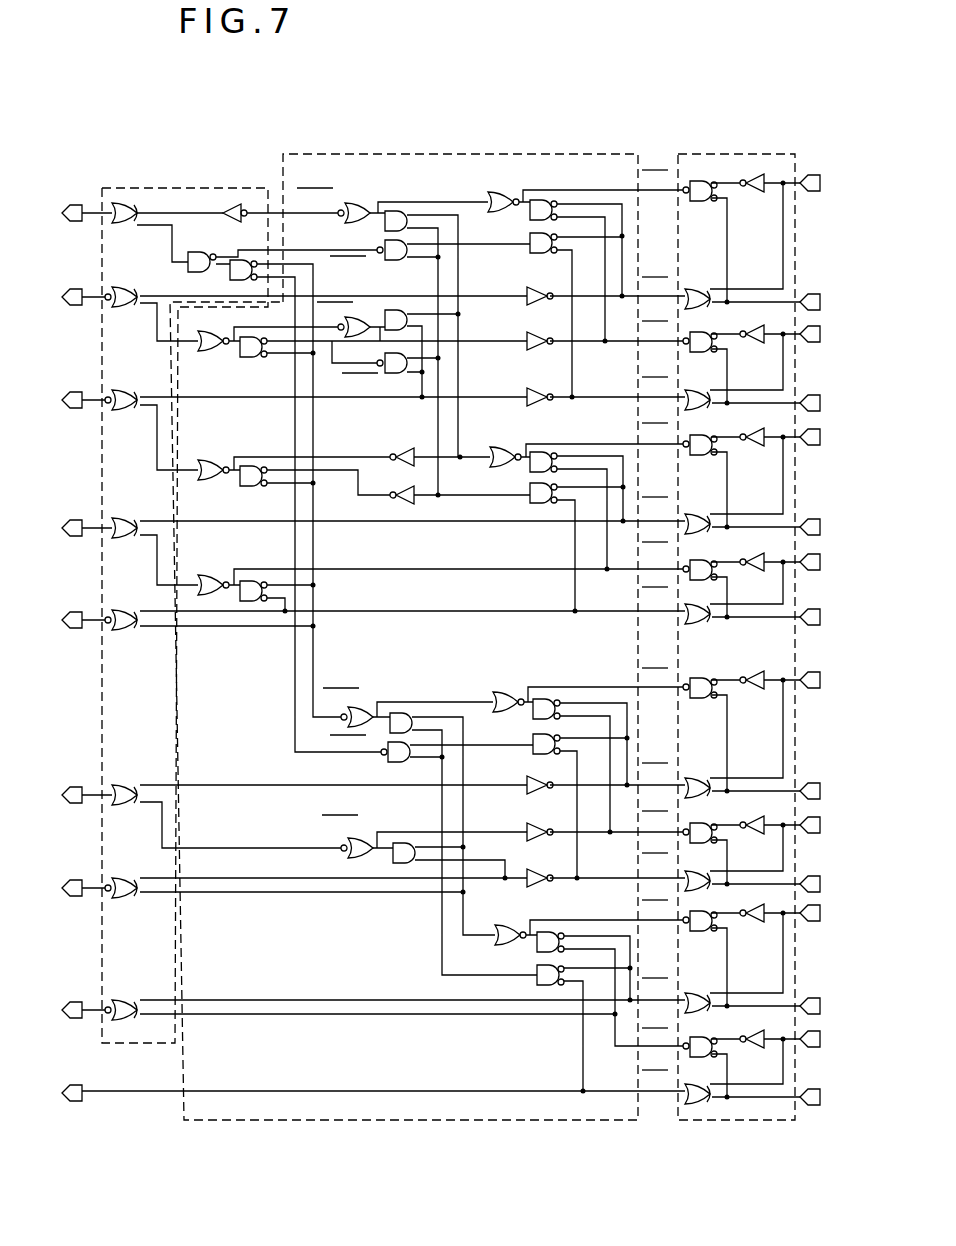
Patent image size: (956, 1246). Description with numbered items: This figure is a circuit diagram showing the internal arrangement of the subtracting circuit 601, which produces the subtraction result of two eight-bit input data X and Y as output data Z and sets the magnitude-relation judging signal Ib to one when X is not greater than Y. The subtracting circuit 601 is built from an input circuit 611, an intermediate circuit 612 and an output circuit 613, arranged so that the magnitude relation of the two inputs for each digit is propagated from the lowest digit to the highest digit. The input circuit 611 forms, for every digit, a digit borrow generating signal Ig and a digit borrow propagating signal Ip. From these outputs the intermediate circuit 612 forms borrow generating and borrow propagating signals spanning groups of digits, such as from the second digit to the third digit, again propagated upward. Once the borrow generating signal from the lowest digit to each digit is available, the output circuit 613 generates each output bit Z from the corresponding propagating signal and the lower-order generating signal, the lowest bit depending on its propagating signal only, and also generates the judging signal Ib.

The subtracting circuit 601 is at (168, 1175).
The input circuit 611 is at (768, 1122).
The intermediate circuit 612 is at (405, 1122).
The output circuit 613 is at (162, 1045).